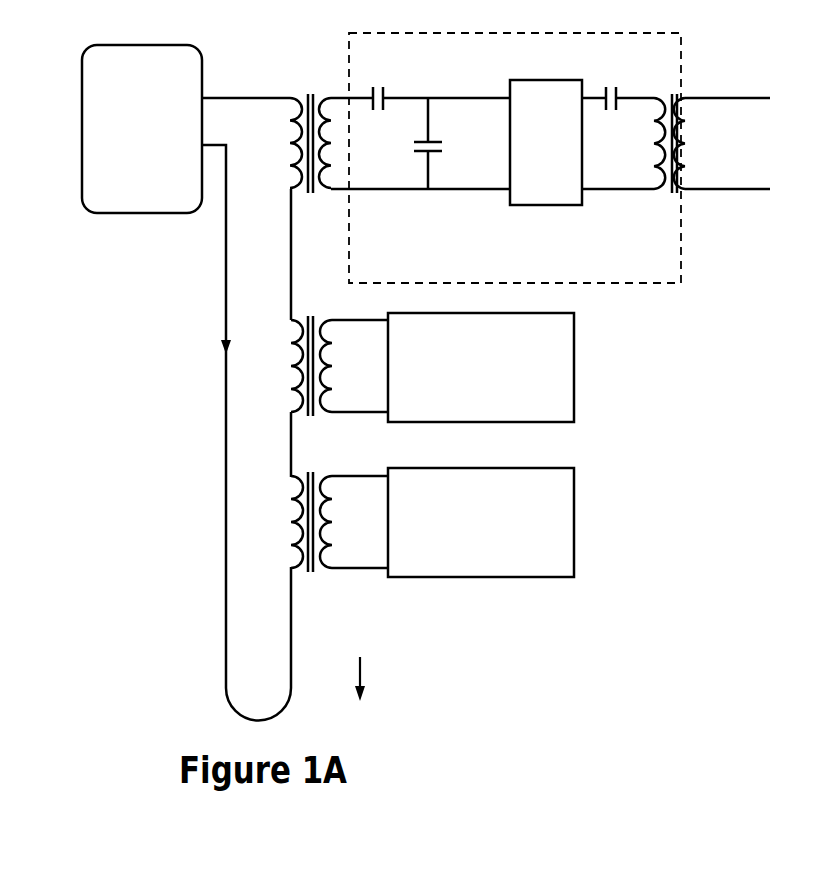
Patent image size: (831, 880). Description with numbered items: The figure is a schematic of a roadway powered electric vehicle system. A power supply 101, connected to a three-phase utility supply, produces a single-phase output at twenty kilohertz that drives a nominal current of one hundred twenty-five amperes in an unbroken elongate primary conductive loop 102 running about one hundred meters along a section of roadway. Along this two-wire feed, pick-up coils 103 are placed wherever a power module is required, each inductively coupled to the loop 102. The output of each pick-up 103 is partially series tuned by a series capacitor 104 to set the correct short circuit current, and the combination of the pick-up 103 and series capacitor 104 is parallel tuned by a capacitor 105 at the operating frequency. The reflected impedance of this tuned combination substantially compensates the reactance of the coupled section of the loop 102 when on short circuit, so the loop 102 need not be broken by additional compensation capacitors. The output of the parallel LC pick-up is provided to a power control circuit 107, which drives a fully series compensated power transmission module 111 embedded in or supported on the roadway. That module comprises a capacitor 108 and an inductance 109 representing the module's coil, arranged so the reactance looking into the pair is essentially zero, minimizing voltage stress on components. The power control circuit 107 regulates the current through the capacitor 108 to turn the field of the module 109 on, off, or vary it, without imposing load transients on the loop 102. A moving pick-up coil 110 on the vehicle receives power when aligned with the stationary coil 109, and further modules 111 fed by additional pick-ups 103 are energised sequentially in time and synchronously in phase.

The power supply 101 is at (142, 129).
The primary conductive loop 102 is at (225, 409).
The pick-up coil 103 is at (301, 90).
The series capacitor 104 is at (388, 88).
The parallel tuning capacitor 105 is at (437, 140).
The power control circuit 107 is at (546, 142).
The capacitor 108 is at (603, 86).
The inductance of power transfer module 109 is at (633, 143).
The moving pick-up coil 110 is at (727, 128).
The power transmission module 111 is at (515, 291).